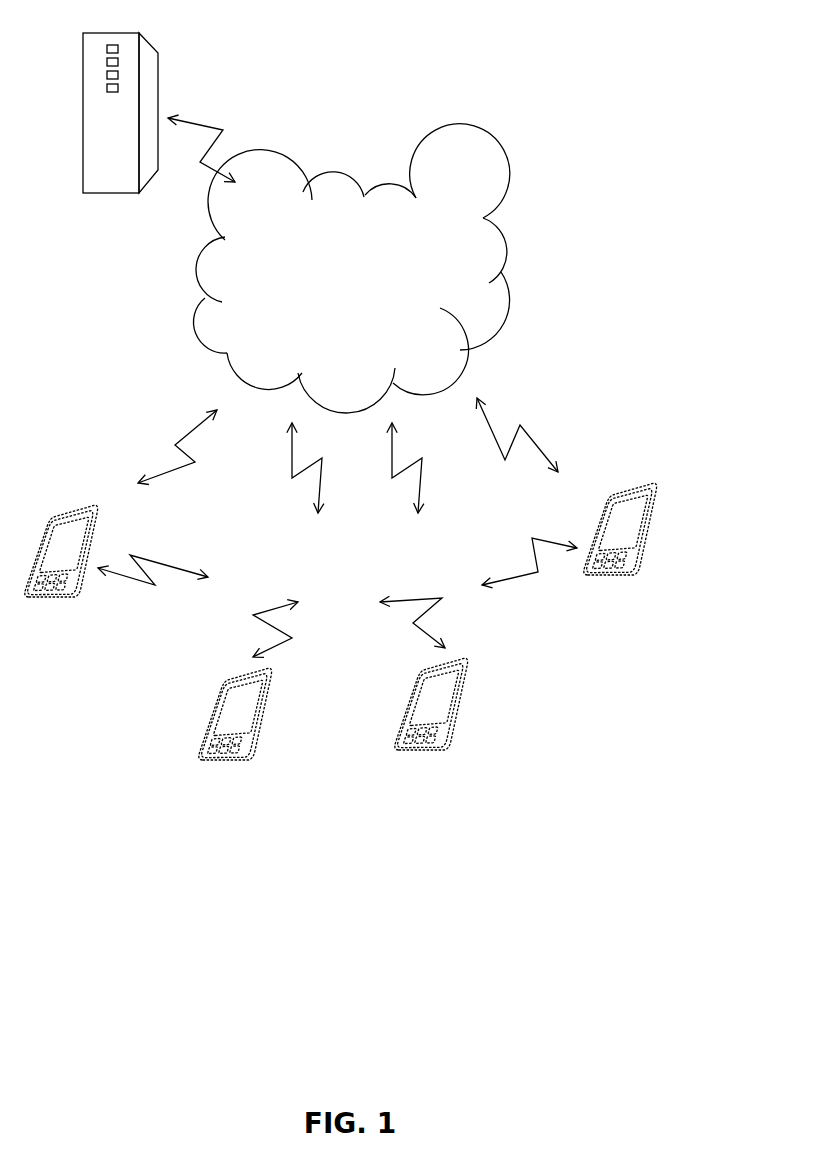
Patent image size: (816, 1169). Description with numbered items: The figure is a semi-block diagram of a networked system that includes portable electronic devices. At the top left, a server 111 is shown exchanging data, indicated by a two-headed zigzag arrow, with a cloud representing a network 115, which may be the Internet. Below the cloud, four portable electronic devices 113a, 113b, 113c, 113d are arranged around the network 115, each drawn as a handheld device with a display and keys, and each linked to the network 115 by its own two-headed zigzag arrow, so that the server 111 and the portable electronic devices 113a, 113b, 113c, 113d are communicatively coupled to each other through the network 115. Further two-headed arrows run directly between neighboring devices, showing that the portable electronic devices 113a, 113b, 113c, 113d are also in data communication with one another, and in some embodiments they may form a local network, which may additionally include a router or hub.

The server 111 is at (158, 78).
The network 115 is at (450, 180).
The portable electronic device 113a is at (643, 547).
The portable electronic device 113b is at (430, 753).
The portable electronic device 113c is at (243, 763).
The portable electronic device 113d is at (53, 605).